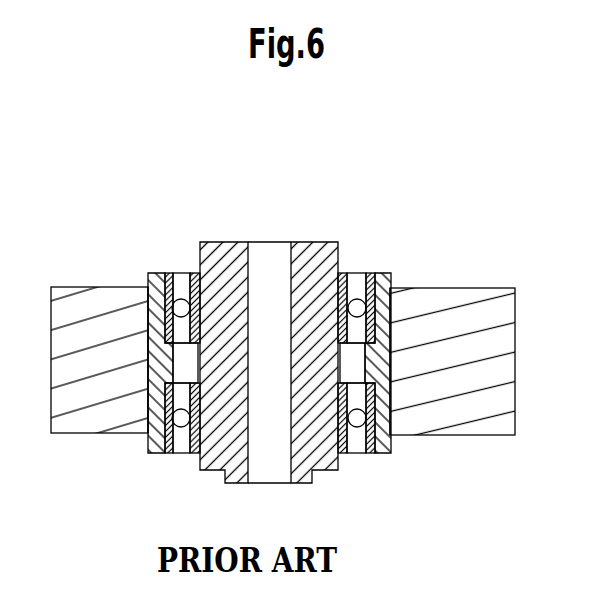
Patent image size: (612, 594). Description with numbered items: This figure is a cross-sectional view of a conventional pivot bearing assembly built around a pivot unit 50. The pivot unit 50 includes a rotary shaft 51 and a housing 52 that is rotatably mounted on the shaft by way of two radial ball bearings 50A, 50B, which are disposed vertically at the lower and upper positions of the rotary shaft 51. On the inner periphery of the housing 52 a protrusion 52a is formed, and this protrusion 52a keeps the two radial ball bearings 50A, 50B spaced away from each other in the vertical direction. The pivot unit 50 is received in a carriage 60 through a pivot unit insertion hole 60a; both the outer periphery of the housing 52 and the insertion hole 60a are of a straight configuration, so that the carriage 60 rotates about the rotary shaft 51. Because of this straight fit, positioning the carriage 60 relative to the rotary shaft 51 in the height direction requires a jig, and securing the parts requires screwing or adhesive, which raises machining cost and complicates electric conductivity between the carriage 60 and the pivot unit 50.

The pivot unit 50 is at (315, 312).
The rotary shaft 51 is at (317, 242).
The housing 52 is at (392, 307).
The protrusion 52a is at (362, 362).
The radial ball bearing 50A is at (370, 455).
The radial ball bearing 50B is at (371, 273).
The carriage 60 is at (477, 436).
The pivot unit insertion hole 60a is at (156, 292).